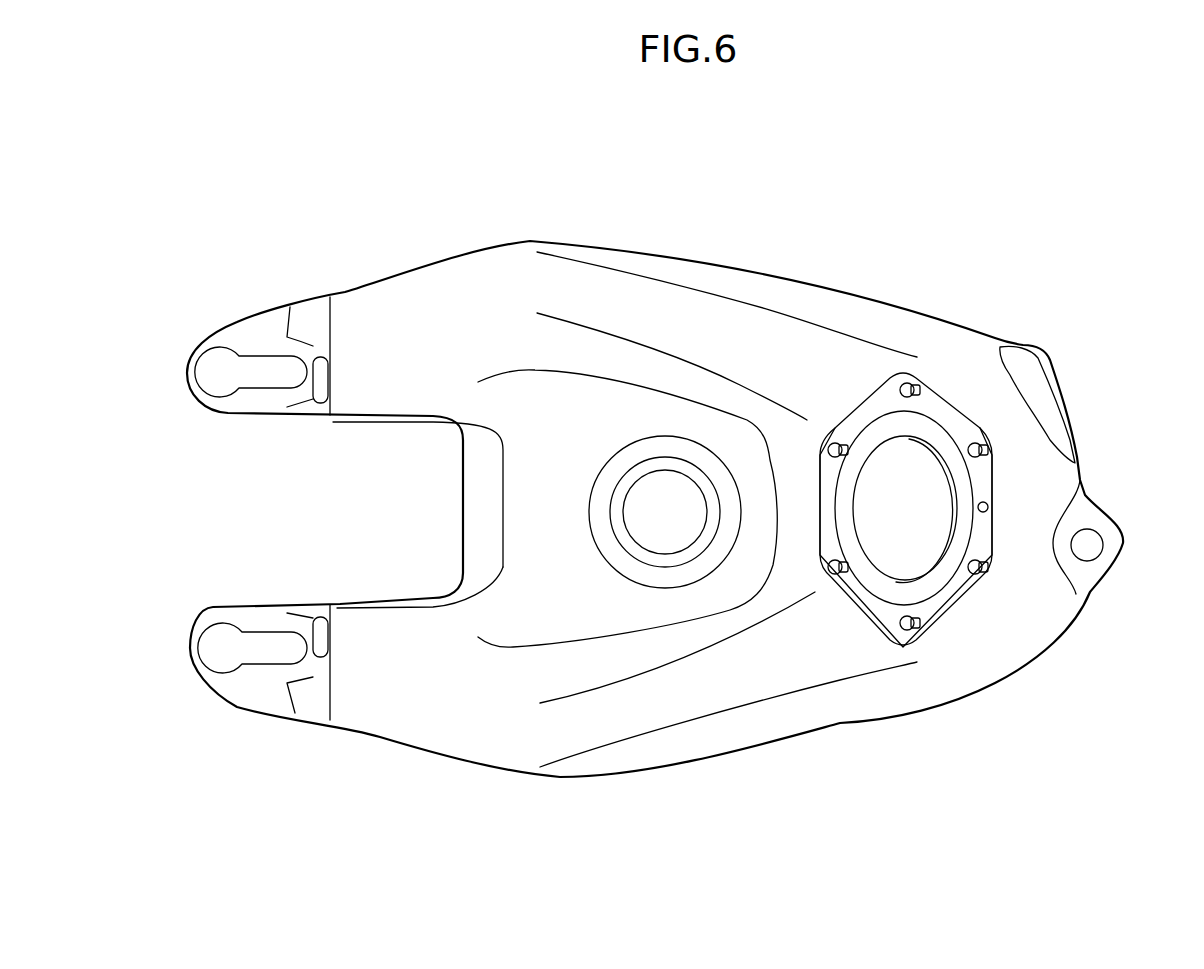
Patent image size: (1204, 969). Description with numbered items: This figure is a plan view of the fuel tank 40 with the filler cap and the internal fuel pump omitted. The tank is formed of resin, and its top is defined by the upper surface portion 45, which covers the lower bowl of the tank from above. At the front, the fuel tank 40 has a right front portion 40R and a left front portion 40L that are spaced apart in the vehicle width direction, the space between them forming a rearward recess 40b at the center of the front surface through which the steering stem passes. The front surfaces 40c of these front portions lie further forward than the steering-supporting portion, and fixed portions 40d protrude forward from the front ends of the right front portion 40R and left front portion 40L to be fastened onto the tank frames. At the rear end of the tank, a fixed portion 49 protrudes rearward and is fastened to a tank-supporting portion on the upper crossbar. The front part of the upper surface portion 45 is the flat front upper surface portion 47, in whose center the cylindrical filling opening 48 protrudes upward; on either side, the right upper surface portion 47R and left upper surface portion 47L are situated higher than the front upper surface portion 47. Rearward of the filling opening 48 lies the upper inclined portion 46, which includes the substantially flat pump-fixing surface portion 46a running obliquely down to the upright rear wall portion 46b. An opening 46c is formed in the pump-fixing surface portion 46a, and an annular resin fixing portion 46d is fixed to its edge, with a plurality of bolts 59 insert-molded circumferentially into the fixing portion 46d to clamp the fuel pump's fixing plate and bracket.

The fuel tank 40 is at (783, 236).
The right front portion 40R is at (382, 295).
The left front portion 40L is at (390, 732).
The recess 40b is at (480, 508).
The front surfaces 40c is at (317, 400).
The fixed portions 40d is at (218, 340).
The upper surface portion 45 is at (1037, 795).
The upper inclined portion 46 is at (1093, 752).
The pump-fixing surface portion 46a is at (940, 653).
The rear wall portion 46b is at (1088, 600).
The opening 46c is at (920, 437).
The fixing portion 46d is at (948, 443).
The front upper surface portion 47 is at (623, 590).
The right upper surface portion 47R is at (570, 277).
The left upper surface portion 47L is at (563, 683).
The filling opening 48 is at (677, 460).
The fixed portion 49 is at (1113, 547).
The bolts 59 is at (833, 442).